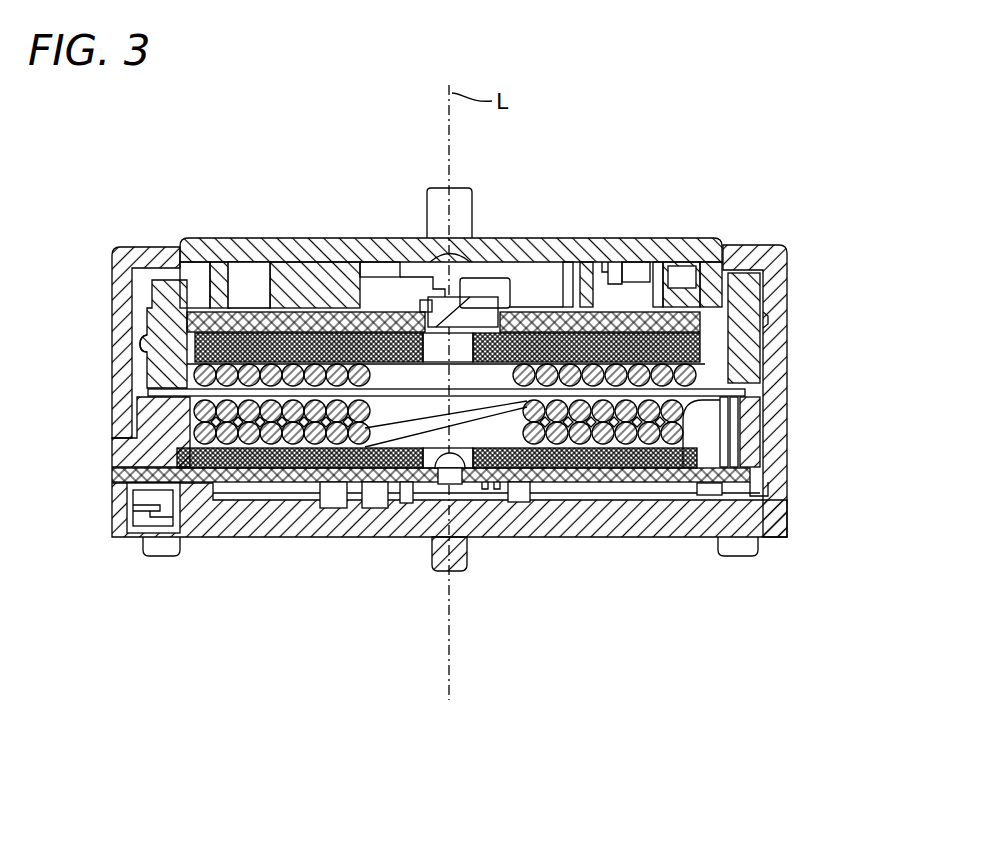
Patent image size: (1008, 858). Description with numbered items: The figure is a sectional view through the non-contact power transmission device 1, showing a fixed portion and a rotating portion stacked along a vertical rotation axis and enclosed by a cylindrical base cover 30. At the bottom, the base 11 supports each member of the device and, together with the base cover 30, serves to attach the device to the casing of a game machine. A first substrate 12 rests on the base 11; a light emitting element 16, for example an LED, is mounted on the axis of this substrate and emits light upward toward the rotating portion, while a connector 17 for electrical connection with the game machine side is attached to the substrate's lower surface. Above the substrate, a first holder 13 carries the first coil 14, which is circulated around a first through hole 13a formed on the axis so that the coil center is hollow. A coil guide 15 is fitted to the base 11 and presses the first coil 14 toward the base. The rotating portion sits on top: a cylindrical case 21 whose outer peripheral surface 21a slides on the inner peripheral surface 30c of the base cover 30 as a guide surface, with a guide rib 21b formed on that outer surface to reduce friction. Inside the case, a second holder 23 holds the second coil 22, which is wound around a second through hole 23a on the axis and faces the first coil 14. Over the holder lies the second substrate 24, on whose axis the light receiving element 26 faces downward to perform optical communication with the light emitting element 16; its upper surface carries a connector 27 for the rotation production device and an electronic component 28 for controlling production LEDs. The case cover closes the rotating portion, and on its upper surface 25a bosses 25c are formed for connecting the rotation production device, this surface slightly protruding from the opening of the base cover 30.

The non-contact power transmission device 1 is at (778, 153).
The base 11 is at (767, 532).
The first substrate 12 is at (752, 473).
The first holder 13 is at (646, 470).
The first through hole 13a is at (450, 466).
The first coil 14 is at (250, 485).
The coil guide 15 is at (752, 428).
The light emitting element 16 is at (463, 525).
The connector 17 is at (118, 523).
The case 21 is at (740, 298).
The outer peripheral surface 21a is at (146, 316).
The guide rib 21b is at (141, 344).
The second coil 22 is at (700, 377).
The second holder 23 is at (327, 337).
The second through hole 23a is at (433, 313).
The second substrate 24 is at (676, 262).
The upper surface 25a is at (598, 282).
The boss 25c is at (474, 215).
The light receiving element 26 is at (540, 275).
The connector 27 is at (636, 292).
The electronic component 28 is at (283, 277).
The base cover 30 is at (790, 343).
The inner peripheral surface 30c is at (770, 320).